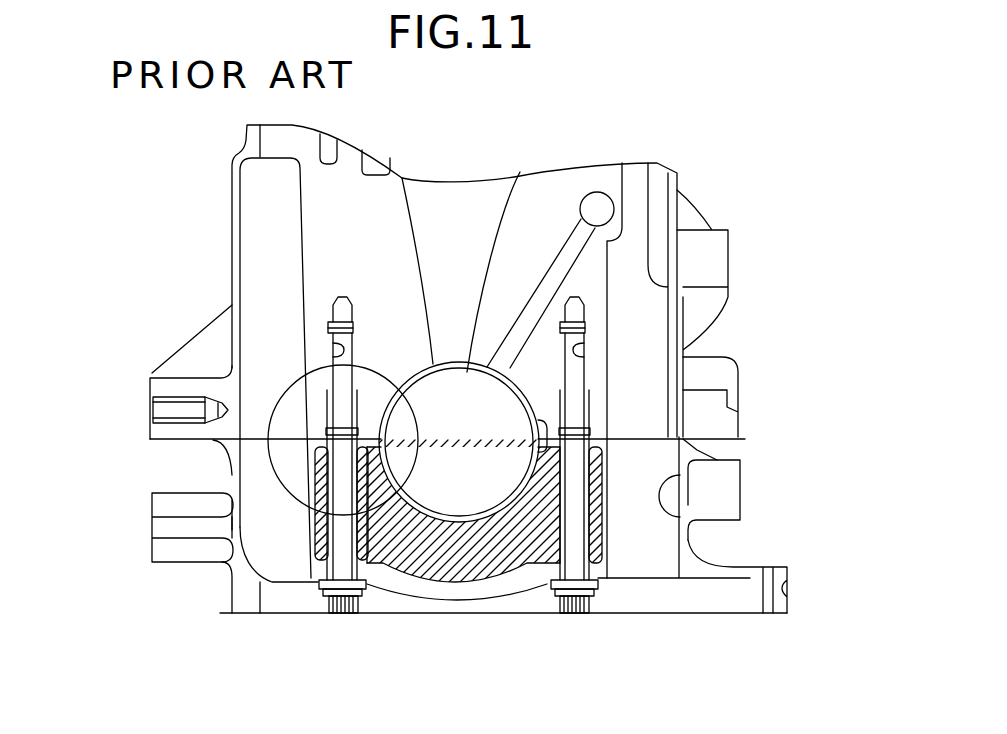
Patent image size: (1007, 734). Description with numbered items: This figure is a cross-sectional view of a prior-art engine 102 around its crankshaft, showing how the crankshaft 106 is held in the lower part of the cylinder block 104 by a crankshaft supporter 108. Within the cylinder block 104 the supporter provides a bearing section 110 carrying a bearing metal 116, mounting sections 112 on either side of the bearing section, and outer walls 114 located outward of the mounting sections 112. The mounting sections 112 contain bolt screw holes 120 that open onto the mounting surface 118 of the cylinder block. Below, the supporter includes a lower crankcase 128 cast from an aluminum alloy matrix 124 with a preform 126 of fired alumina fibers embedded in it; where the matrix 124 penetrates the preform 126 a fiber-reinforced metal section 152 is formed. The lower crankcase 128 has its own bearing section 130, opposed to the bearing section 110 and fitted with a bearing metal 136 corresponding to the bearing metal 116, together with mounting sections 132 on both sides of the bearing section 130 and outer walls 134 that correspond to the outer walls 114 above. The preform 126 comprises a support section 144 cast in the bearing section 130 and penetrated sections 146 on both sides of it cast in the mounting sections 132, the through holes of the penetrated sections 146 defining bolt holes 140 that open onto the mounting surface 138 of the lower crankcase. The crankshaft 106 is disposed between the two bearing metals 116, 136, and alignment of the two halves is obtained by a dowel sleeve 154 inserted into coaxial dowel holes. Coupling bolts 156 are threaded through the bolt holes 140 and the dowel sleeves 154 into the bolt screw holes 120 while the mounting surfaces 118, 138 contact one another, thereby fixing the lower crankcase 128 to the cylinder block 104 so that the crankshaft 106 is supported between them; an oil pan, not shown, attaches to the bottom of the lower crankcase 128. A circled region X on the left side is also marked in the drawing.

The engine 102 is at (697, 144).
The cylinder block 104 is at (732, 230).
The crankshaft 106 is at (520, 172).
The crankshaft supporter 108 is at (146, 517).
The bearing section 110 is at (452, 340).
The mounting sections 112 is at (315, 320).
The outer walls 114 is at (232, 303).
The bearing metal 116 is at (402, 178).
The mounting surface 118 is at (697, 451).
The bolt screw holes 120 is at (330, 341).
The matrix 124 is at (467, 598).
The preform 126 is at (487, 548).
The lower crankcase 128 is at (745, 492).
The bearing section 130 is at (437, 593).
The mounting sections 132 is at (322, 507).
The outer walls 134 is at (225, 533).
The bearing metal 136 is at (530, 562).
The mounting surface 138 is at (552, 422).
The bolt holes 140 is at (310, 535).
The support section 144 is at (392, 573).
The penetrated sections 146 is at (330, 515).
The fiber-reinforced metal section 152 is at (350, 610).
The dowel sleeve 154 is at (232, 380).
The coupling bolts 156 is at (354, 342).
The reference circle X is at (268, 462).